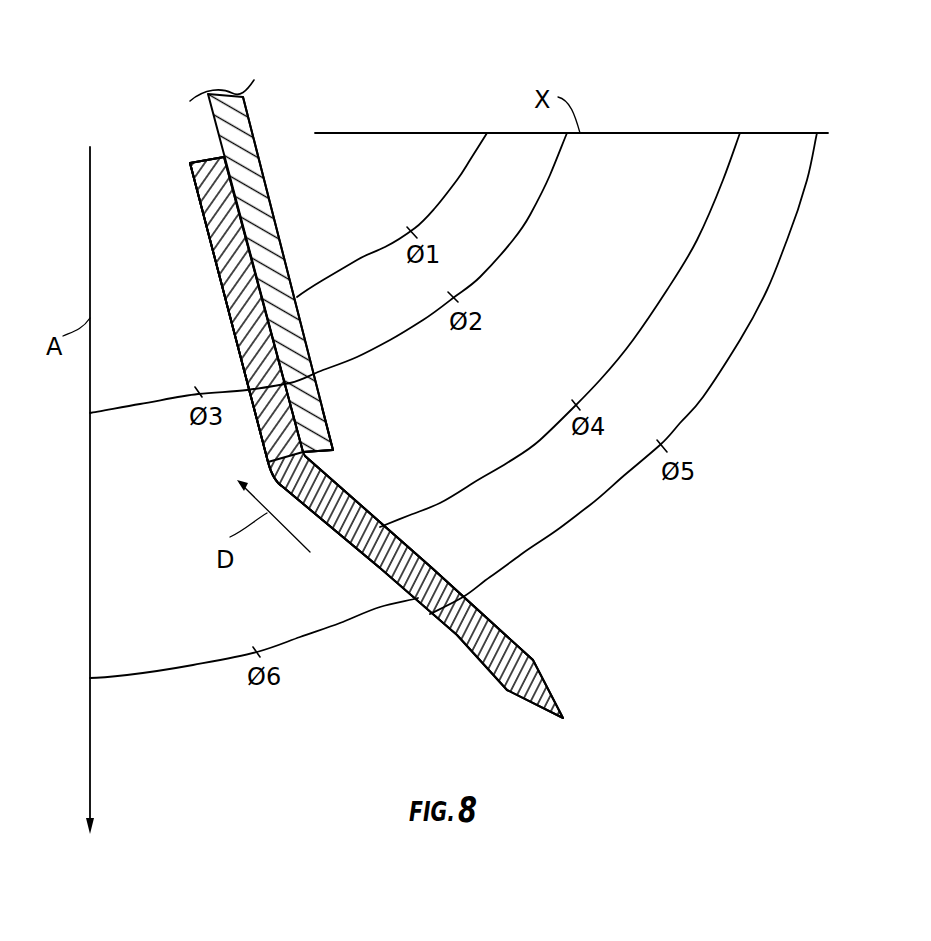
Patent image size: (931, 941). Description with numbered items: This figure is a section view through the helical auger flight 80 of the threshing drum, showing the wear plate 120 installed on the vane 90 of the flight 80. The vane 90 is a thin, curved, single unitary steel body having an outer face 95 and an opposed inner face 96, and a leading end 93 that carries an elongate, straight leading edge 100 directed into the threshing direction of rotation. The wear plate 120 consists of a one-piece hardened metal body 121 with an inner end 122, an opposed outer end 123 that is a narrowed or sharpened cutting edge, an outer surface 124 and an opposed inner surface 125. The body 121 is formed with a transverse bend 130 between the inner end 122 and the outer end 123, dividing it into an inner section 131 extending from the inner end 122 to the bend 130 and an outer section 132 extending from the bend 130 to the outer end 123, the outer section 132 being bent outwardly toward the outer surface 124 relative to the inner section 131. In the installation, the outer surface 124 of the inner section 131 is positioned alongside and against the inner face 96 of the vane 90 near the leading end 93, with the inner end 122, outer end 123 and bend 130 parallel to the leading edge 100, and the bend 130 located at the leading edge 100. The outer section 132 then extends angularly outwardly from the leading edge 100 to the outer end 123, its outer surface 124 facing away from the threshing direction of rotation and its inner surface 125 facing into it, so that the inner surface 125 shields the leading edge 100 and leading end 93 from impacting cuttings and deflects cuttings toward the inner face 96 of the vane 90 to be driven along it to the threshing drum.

The helical auger flight 80 is at (252, 107).
The vane 90 is at (227, 92).
The leading end 93 is at (322, 438).
The outer face 95 is at (263, 192).
The inner face 96 is at (240, 205).
The leading edge 100 is at (310, 460).
The wear plate 120 is at (222, 270).
The body 121 is at (228, 268).
The inner end 122 is at (200, 157).
The outer end 123 is at (563, 719).
The outer surface 124 is at (247, 230).
The inner surface 125 is at (196, 192).
The bend 130 is at (306, 460).
The inner section 131 is at (255, 268).
The outer section 132 is at (433, 567).